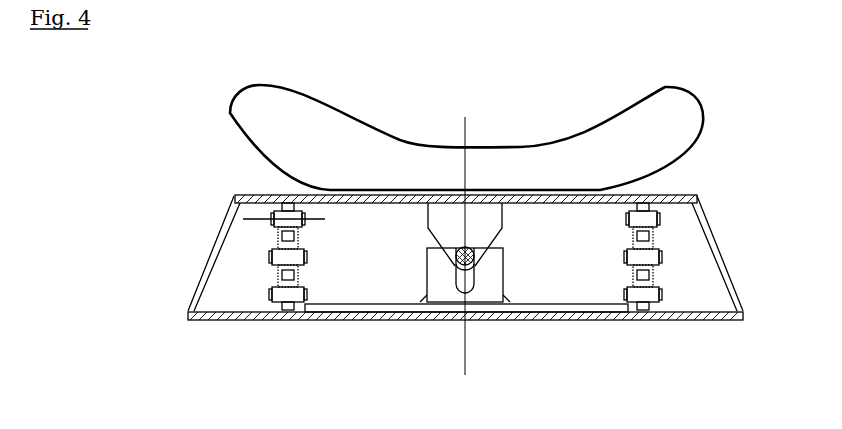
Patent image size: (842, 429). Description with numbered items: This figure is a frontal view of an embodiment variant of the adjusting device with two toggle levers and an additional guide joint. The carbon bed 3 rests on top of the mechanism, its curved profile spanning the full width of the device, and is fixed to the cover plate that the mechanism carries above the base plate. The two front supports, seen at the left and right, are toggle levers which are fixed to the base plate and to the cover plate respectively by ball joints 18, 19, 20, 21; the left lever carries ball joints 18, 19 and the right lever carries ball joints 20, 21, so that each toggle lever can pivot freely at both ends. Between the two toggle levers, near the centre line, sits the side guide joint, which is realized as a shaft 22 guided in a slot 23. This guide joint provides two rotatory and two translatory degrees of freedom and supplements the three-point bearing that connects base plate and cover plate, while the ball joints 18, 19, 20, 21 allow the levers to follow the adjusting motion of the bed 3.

The bed 3 is at (692, 113).
The ball joint 18 is at (267, 284).
The ball joint 19 is at (307, 233).
The ball joint 20 is at (673, 233).
The ball joint 21 is at (661, 304).
The shaft 22 is at (471, 249).
The slot 23 is at (456, 283).